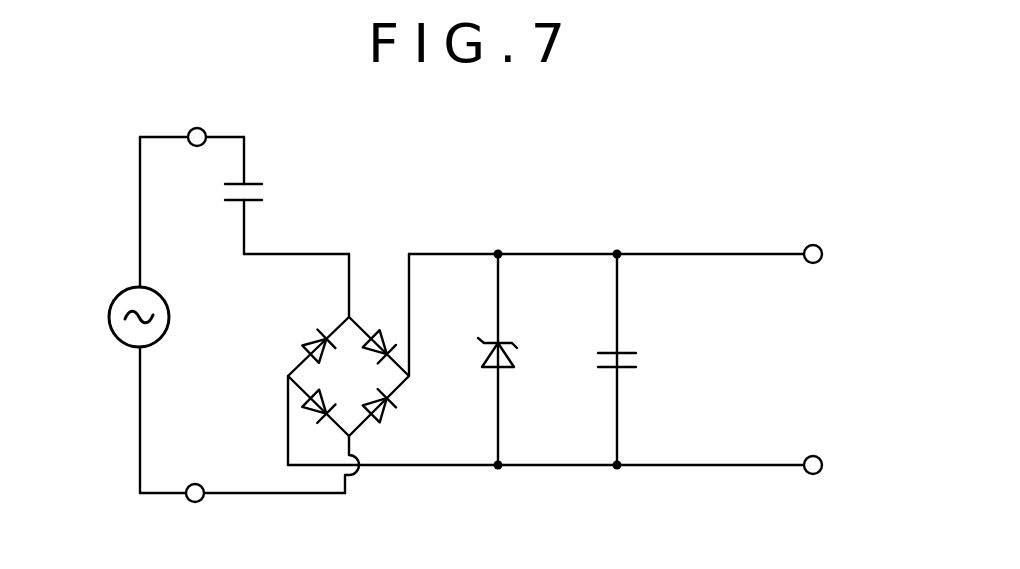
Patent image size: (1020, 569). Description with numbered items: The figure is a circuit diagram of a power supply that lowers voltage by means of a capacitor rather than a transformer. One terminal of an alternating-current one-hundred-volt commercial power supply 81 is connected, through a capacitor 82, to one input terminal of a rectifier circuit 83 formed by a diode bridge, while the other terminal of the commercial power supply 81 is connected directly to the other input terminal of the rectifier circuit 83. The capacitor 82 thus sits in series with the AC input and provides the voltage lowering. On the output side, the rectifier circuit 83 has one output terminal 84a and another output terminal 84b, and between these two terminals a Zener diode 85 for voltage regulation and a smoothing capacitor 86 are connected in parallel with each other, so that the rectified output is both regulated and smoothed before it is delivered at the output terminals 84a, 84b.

The commercial power supply 81 is at (170, 317).
The capacitor 82 is at (250, 182).
The rectifier circuit 83 is at (350, 340).
The output terminal 84a is at (815, 245).
The output terminal 84b is at (815, 456).
The Zener diode 85 is at (507, 340).
The smoothing capacitor 86 is at (622, 352).